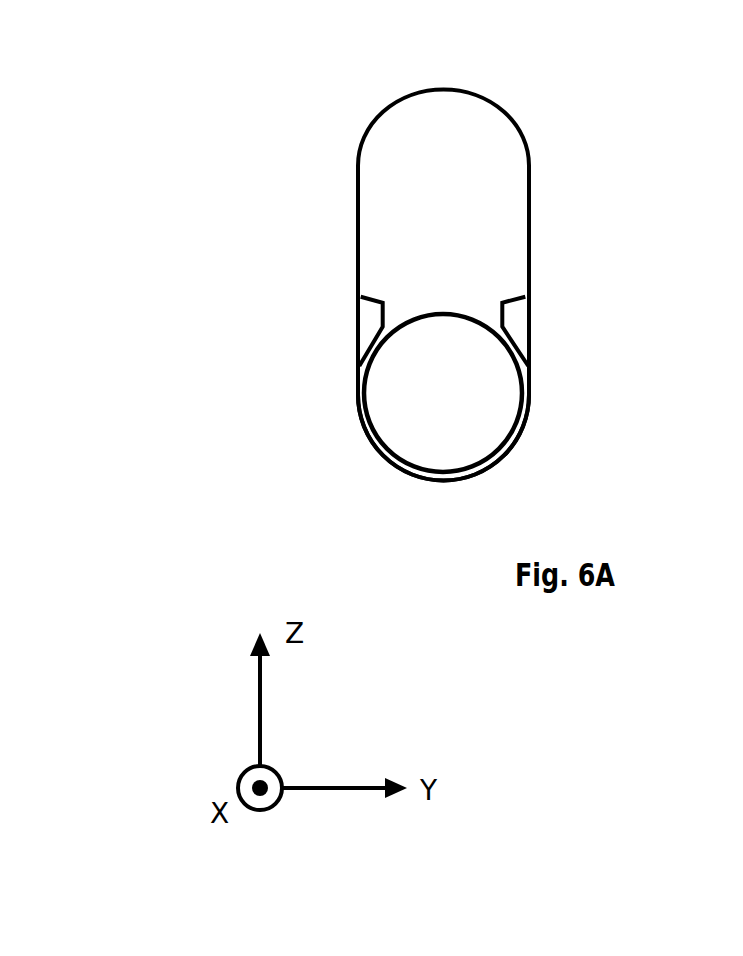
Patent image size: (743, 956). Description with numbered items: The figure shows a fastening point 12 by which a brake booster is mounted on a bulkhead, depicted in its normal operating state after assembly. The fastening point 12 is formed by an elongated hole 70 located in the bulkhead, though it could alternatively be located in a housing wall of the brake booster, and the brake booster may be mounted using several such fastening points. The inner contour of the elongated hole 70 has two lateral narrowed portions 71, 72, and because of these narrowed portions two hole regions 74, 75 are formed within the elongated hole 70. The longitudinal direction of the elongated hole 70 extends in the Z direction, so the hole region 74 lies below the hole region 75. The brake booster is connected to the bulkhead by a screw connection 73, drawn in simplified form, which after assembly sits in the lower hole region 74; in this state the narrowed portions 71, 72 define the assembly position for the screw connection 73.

The fastening point 12 is at (563, 130).
The elongated hole 70 is at (367, 128).
The lateral narrowed portion 71 is at (368, 319).
The lateral narrowed portion 72 is at (518, 319).
The screw connection 73 is at (387, 427).
The lower hole region 74 is at (518, 443).
The upper hole region 75 is at (486, 193).